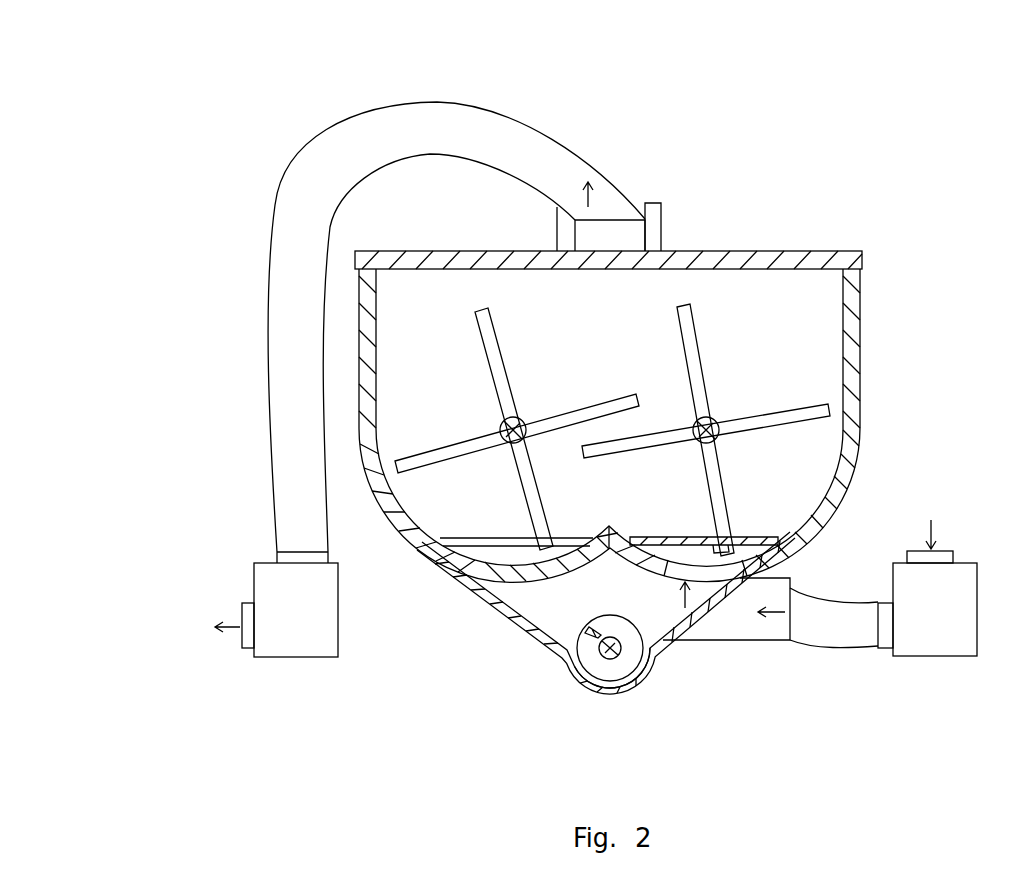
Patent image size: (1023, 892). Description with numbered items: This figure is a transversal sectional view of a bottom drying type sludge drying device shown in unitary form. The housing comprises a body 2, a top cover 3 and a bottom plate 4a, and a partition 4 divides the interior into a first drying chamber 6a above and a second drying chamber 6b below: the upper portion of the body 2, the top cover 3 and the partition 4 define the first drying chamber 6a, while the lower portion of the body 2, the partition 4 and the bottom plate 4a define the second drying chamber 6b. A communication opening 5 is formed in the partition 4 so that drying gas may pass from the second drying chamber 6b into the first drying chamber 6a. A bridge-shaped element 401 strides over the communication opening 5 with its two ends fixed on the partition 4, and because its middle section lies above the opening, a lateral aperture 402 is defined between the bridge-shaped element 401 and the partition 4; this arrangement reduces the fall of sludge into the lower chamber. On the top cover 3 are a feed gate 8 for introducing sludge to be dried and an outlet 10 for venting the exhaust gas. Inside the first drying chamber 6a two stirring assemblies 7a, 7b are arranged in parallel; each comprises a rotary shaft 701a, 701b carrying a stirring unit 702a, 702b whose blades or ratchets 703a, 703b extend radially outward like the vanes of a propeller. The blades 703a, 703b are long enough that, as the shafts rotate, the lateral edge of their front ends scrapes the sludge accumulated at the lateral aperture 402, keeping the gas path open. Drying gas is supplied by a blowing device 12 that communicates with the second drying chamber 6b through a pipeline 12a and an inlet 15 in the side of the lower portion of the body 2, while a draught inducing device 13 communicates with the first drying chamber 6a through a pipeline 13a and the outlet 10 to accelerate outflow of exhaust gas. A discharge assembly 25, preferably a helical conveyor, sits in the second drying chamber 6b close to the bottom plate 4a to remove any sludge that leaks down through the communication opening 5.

The body 2 is at (852, 395).
The top cover 3 is at (440, 260).
The partition 4 is at (515, 570).
The bottom plate 4a is at (577, 678).
The communication opening 5 is at (727, 568).
The first drying chamber 6a is at (705, 290).
The second drying chamber 6b is at (661, 601).
The stirring assembly 7a is at (787, 365).
The stirring assembly 7b is at (388, 336).
The rotary shaft 701a is at (705, 395).
The rotary shaft 701b is at (503, 425).
The stirring unit 702a is at (703, 330).
The stirring unit 702b is at (447, 437).
The blade or ratchet 703a is at (907, 352).
The blade or ratchet 703b is at (268, 464).
The feed gate 8 is at (647, 210).
The outlet 10 is at (618, 230).
The blowing device 12 is at (944, 651).
The pipeline 12a is at (838, 627).
The draught inducing device 13 is at (315, 643).
The pipeline 13a is at (475, 120).
The inlet 15 is at (767, 621).
The discharge assembly 25 is at (607, 667).
The bridge-shaped element 401 is at (762, 512).
The lateral aperture 402 is at (733, 552).